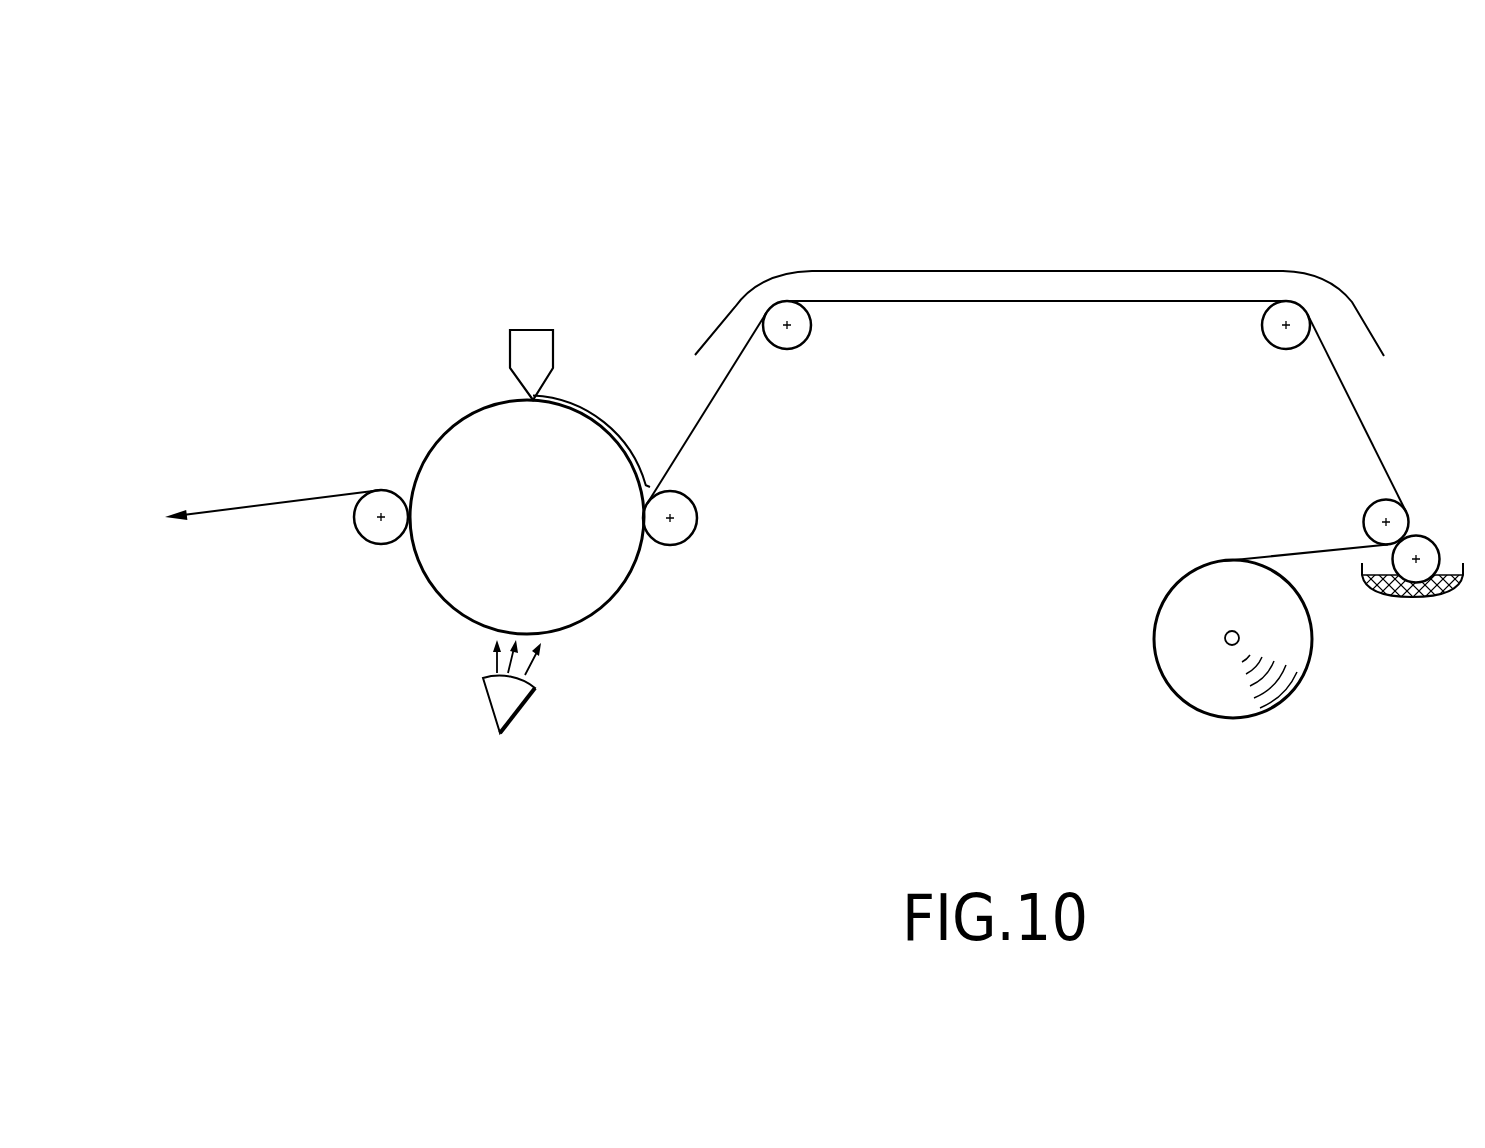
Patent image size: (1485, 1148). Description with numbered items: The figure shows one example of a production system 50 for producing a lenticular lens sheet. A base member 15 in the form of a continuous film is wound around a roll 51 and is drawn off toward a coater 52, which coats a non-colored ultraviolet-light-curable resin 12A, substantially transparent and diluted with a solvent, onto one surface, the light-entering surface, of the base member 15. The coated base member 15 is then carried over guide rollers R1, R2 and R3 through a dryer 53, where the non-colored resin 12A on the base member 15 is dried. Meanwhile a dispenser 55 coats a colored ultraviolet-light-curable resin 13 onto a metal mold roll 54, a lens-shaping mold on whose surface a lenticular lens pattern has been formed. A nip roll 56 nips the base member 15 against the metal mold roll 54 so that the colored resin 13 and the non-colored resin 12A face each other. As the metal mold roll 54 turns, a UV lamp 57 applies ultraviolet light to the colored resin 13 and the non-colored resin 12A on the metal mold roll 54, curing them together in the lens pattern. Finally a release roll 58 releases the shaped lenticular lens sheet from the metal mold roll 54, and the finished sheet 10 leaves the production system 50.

The coated web 10 is at (285, 498).
The non-colored ultraviolet-light-curable resin 12A is at (1407, 596).
The colored ultraviolet-light-curable resin 13 is at (590, 408).
The base member 15 is at (1262, 552).
The production system 50 is at (1210, 212).
The roll 51 is at (1188, 692).
The coater 52 is at (1427, 544).
The dryer 53 is at (933, 270).
The metal mold roll 54 is at (450, 447).
The dispenser 55 is at (532, 345).
The nip roll 56 is at (697, 518).
The UV lamp 57 is at (495, 702).
The release roll 58 is at (362, 532).
The guide roller R1 is at (1375, 513).
The guide roller R2 is at (1276, 342).
The guide roller R3 is at (798, 336).